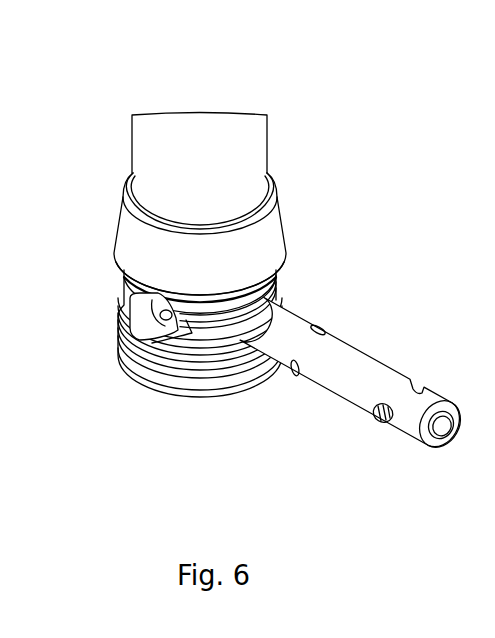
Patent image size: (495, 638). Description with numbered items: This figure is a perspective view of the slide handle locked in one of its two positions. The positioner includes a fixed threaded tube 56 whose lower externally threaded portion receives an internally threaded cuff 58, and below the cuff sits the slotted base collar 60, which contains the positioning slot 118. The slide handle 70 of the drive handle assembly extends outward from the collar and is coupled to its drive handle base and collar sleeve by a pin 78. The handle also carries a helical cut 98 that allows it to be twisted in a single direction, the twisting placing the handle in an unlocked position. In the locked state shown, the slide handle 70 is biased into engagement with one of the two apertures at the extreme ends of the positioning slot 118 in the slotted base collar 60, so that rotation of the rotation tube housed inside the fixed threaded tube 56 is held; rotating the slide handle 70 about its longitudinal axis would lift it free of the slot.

The fixed threaded tube 56 is at (268, 133).
The threaded cuff 58 is at (283, 210).
The slotted base collar 60 is at (160, 397).
The slide handle 70 is at (350, 335).
The pin 78 is at (292, 372).
The helical cut 98 is at (371, 420).
The positioning slot 118 is at (203, 343).